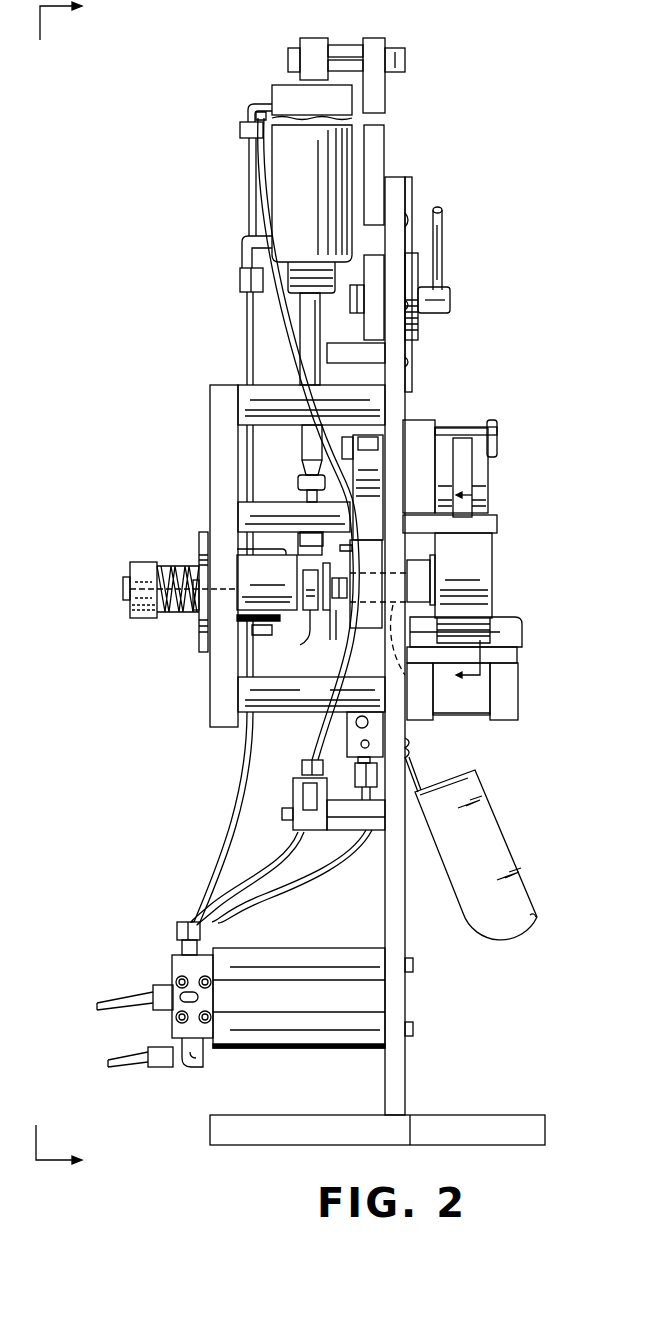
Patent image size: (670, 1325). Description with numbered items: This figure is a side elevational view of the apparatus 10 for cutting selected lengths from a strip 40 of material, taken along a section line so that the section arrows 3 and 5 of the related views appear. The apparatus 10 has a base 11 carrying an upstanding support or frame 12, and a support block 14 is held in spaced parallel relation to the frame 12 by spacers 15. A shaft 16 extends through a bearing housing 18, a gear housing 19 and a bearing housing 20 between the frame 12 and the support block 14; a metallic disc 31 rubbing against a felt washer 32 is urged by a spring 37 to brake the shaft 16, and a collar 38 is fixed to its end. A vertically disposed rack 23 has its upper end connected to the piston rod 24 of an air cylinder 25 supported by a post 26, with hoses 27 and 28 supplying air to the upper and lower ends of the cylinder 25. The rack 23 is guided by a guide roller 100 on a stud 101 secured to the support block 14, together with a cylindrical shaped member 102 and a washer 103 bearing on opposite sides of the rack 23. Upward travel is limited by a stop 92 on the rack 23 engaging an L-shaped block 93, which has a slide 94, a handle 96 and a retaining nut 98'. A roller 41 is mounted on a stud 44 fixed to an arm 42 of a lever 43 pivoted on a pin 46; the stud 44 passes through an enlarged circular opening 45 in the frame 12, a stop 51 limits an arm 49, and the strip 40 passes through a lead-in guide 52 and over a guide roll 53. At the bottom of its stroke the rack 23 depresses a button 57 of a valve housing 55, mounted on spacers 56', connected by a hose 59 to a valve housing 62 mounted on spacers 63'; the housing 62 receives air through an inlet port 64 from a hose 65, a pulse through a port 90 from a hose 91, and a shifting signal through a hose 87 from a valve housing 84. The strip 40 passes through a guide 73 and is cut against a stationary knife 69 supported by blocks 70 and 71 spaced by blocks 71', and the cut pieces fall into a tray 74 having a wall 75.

The section line 3- 3 is at (59, 599).
The section line 5- 5 is at (468, 589).
The apparatus 10 is at (488, 982).
The base 11 is at (545, 1133).
The support or frame 12 is at (405, 930).
The support block 14 is at (210, 414).
The spacers 15 is at (280, 385).
The shaft 16 is at (125, 590).
The bearing housing 18 is at (362, 630).
The gear housing 19 is at (340, 625).
The bearing housing 20 is at (266, 626).
The rack 23 is at (302, 763).
The piston rod 24 is at (302, 335).
The air cylinder 25 is at (272, 212).
The post 26 is at (385, 152).
The hose 27 is at (249, 172).
The hose 28 is at (247, 336).
The metallic disc 31 is at (200, 535).
The felt washer 32 is at (207, 530).
The spring 37 is at (170, 612).
The collar 38 is at (168, 540).
The strip of material 40 is at (476, 476).
The roller 41 is at (485, 582).
The arm 42 is at (388, 469).
The lever 43 is at (303, 462).
The stud 44 is at (418, 575).
The enlarged circular opening 45 is at (400, 672).
The pin 46 is at (282, 505).
The arm 49 is at (380, 462).
The stop 51 is at (358, 436).
The lead-in guide 52 is at (462, 428).
The guide roll 53 is at (480, 460).
The valve housing 55 is at (292, 836).
The spacers 56' is at (294, 840).
The button 57 is at (293, 781).
The hose 59 is at (236, 880).
The valve housing 62 is at (175, 950).
The spacers 63' is at (299, 999).
The inlet port 64 is at (196, 1063).
The hose 65 is at (122, 1068).
The stationary knife or cutting blade 69 is at (510, 655).
The support block 70 is at (415, 705).
The support block 71 is at (522, 707).
The blocks 71' is at (470, 707).
The guide 73 is at (510, 628).
The tray 74 is at (449, 897).
The wall 75 is at (516, 858).
The valve housing 84 is at (340, 747).
The hose 87 is at (282, 882).
The port 90 is at (182, 995).
The hose 91 is at (108, 1002).
The stop 92 is at (333, 545).
The L-shaped block 93 is at (336, 363).
The slide 94 is at (420, 330).
The handle 96 is at (444, 232).
The nut 98' is at (356, 297).
The guide roller 100 is at (302, 645).
The stud 101 is at (344, 582).
The cylindrical shaped member 102 is at (267, 585).
The washer 103 is at (343, 596).